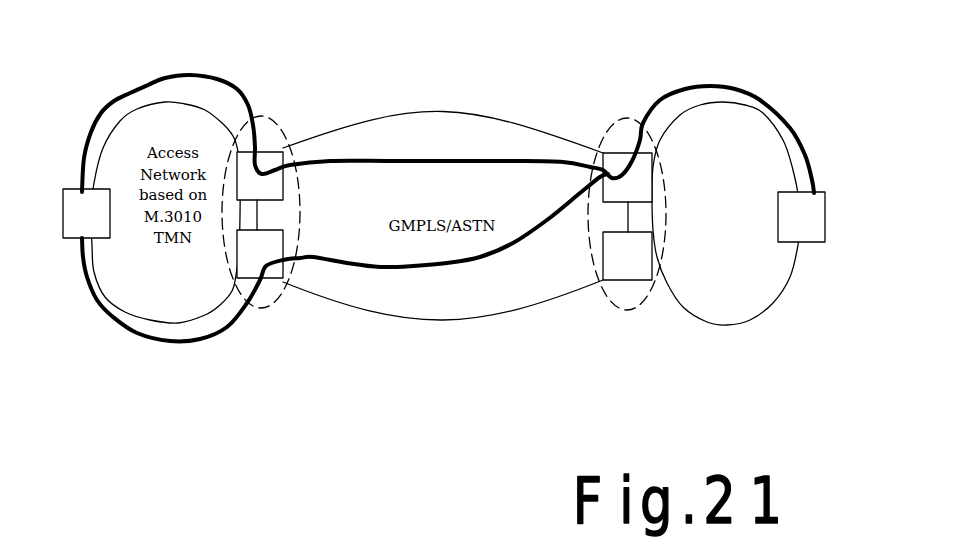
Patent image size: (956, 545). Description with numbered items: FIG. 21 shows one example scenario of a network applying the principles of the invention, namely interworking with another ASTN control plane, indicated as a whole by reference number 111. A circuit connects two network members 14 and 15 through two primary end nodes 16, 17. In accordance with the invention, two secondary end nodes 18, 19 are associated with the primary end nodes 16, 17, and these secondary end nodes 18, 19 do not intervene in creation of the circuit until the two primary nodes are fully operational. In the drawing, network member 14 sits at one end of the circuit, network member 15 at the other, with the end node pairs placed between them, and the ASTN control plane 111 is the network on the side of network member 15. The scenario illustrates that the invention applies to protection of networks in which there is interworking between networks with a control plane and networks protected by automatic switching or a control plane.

The network member 14 is at (72, 238).
The network member 15 is at (812, 236).
The primary end node 16 is at (272, 157).
The primary end node 17 is at (618, 157).
The secondary end node 18 is at (266, 272).
The secondary end node 19 is at (628, 278).
The ASTN control plane network 111 is at (705, 318).